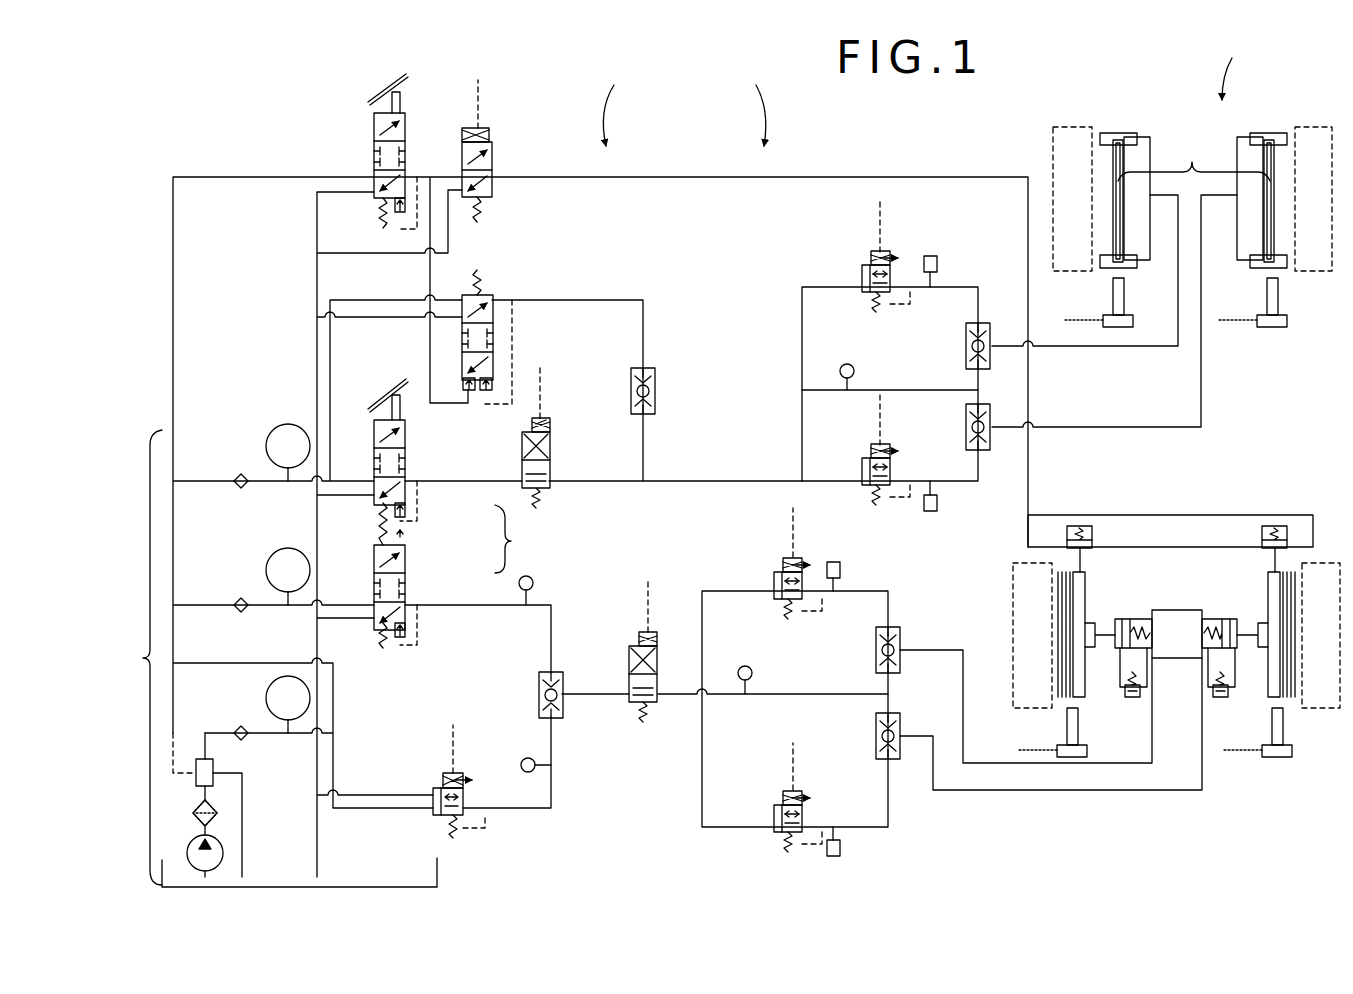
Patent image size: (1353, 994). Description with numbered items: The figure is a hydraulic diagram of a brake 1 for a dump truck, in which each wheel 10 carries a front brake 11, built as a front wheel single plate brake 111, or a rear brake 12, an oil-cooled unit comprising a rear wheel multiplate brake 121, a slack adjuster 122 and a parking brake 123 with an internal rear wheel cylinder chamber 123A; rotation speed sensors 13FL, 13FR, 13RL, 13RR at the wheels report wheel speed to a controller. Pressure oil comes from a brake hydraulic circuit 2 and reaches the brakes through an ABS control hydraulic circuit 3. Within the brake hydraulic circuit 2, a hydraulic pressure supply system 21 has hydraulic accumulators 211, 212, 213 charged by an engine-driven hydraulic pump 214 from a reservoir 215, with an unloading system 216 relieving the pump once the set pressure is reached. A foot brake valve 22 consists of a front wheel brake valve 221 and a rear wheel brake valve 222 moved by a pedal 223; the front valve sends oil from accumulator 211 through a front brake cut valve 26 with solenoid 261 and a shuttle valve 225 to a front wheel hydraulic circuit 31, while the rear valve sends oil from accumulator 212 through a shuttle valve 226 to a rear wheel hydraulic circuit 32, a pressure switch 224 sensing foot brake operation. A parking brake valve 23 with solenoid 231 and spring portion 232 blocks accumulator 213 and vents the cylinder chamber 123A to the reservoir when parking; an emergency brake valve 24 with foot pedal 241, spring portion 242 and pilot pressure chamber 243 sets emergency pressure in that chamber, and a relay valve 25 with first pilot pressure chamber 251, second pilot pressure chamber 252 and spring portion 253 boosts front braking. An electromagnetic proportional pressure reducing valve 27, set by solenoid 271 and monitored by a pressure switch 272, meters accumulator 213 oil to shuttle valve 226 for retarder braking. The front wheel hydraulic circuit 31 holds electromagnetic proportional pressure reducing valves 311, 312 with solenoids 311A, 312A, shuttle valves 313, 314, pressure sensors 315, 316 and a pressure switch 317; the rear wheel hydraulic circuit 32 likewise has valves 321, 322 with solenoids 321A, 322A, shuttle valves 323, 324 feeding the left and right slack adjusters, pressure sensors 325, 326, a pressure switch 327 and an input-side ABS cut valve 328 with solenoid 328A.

The brake 1 is at (1236, 67).
The brake hydraulic circuit 2 is at (618, 109).
The ABS control hydraulic circuit 3 is at (750, 109).
The wheel 10 is at (1162, 389).
The front brake 11 is at (1195, 174).
The front wheel single plate brake 111 is at (1194, 159).
The rear brake 12 is at (1151, 661).
The rear wheel multiplate brake 121 is at (1176, 690).
The slack adjuster 122 is at (1176, 621).
The parking brake 123 is at (1170, 505).
The rear wheel cylinder chamber 123A is at (1177, 528).
The rotation speed sensor 13FL is at (1108, 334).
The rotation speed sensor 13FR is at (1261, 334).
The rotation speed sensor 13RL is at (1060, 772).
The rotation speed sensor 13RR is at (1269, 766).
The hydraulic pressure supply system 21 is at (137, 657).
The hydraulic accumulator 211 is at (247, 456).
The hydraulic accumulator 212 is at (247, 580).
The hydraulic accumulator 213 is at (247, 708).
The hydraulic pump 214 is at (245, 838).
The reservoir 215 is at (332, 887).
The unloading system 216 is at (240, 805).
The foot brake valve 22 is at (518, 539).
The front wheel brake valve 221 is at (435, 478).
The rear wheel brake valve 222 is at (435, 575).
The pedal 223 is at (381, 382).
The pressure switch 224 is at (562, 568).
The shuttle valve 225 is at (679, 388).
The shuttle valve 226 is at (570, 669).
The parking brake valve 23 is at (510, 169).
The solenoid 231 is at (517, 111).
The spring portion 232 is at (522, 211).
The emergency brake valve 24 is at (352, 155).
The foot pedal 241 is at (354, 93).
The spring portion 242 is at (356, 223).
The pilot pressure chamber 243 is at (392, 232).
The relay valve 25 is at (510, 327).
The first pilot pressure chamber 251 is at (481, 415).
The second pilot pressure chamber 252 is at (526, 352).
The spring portion 253 is at (520, 266).
The front brake cut valve 26 is at (550, 463).
The solenoid 261 is at (578, 396).
The electromagnetic proportional pressure reducing valve 27 is at (442, 787).
The solenoid 271 is at (473, 756).
The pressure switch 272 is at (533, 812).
The front wheel hydraulic circuit 31 is at (865, 361).
The electromagnetic proportional pressure reducing valve 311 is at (861, 261).
The solenoid 311A is at (912, 227).
The electromagnetic proportional pressure reducing valve 312 is at (861, 455).
The solenoid 312A is at (912, 420).
The shuttle valve 313 is at (944, 354).
The shuttle valve 314 is at (944, 439).
The pressure sensor 315 is at (967, 269).
The pressure sensor 316 is at (967, 500).
The pressure switch 317 is at (832, 352).
The rear wheel hydraulic circuit 32 is at (770, 681).
The electromagnetic proportional pressure reducing valve 321 is at (773, 567).
The solenoid 321A is at (825, 532).
The electromagnetic proportional pressure reducing valve 322 is at (773, 803).
The solenoid 322A is at (825, 766).
The shuttle valve 323 is at (854, 658).
The shuttle valve 324 is at (850, 730).
The pressure sensor 325 is at (871, 574).
The pressure sensor 326 is at (871, 846).
The pressure switch 327 is at (731, 656).
The ABS cut valve 328 is at (615, 696).
The solenoid 328A is at (614, 601).